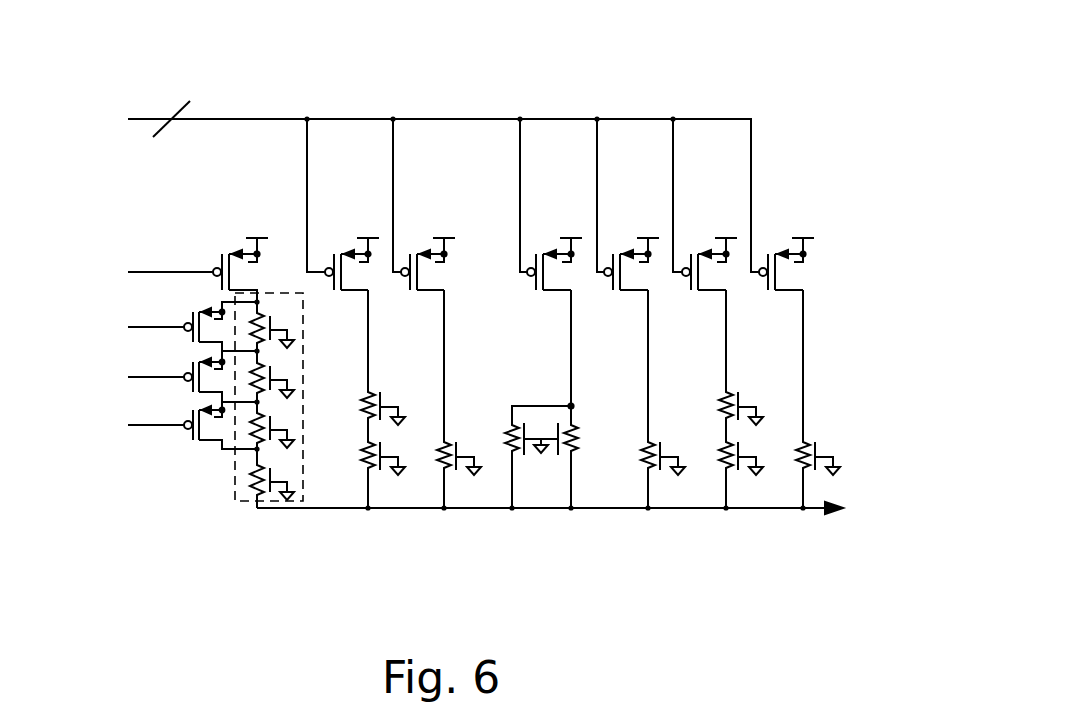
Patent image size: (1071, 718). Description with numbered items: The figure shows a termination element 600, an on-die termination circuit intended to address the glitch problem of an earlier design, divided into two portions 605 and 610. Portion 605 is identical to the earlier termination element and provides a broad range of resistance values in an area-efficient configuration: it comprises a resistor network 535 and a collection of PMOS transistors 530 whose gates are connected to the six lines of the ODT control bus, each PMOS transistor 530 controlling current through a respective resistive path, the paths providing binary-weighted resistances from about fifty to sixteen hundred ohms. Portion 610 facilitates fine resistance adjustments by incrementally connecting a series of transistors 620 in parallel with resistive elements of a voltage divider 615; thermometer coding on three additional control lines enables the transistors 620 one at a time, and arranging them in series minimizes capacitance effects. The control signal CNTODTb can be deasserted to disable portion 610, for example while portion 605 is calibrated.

The termination element 600 is at (737, 82).
The portion 605 is at (833, 553).
The portion 610 is at (307, 553).
The voltage divider 615 is at (235, 470).
The transistors 620 is at (215, 443).
The PMOS transistors 530 is at (812, 250).
The resistor network 535 is at (855, 387).